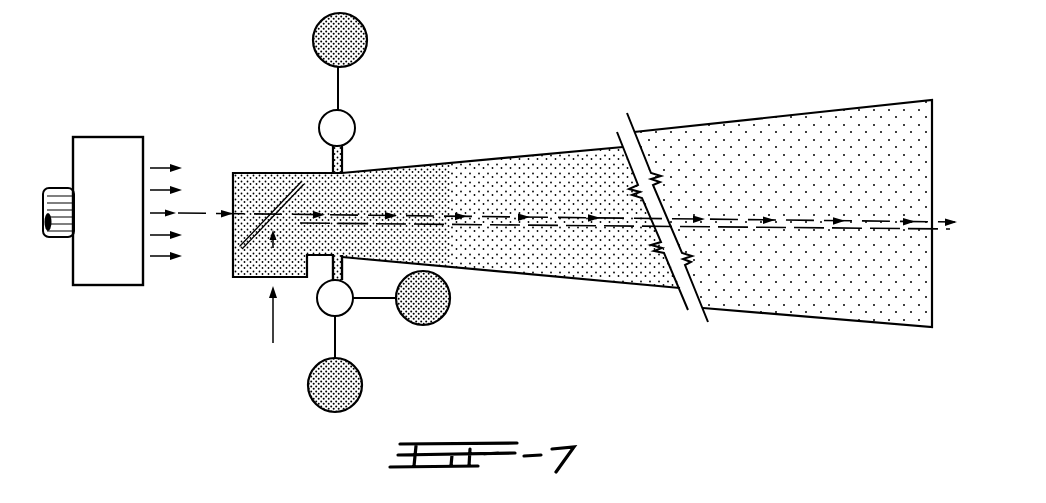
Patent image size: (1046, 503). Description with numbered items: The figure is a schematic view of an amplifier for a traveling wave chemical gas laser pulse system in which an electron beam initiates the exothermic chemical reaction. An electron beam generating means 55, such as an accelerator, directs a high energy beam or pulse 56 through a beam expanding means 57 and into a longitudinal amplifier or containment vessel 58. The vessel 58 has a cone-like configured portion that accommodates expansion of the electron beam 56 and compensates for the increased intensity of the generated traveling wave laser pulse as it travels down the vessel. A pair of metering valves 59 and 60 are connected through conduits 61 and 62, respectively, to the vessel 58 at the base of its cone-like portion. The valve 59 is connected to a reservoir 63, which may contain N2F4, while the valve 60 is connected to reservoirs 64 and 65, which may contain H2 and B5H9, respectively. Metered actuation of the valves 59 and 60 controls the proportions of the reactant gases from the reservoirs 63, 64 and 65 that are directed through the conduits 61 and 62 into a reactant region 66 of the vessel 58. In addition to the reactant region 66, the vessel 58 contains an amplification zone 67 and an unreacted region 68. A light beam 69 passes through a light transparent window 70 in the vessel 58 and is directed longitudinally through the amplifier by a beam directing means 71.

The electron beam generating means 55 is at (56, 188).
The high energy beam 56 is at (180, 190).
The beam expanding means 57 is at (123, 137).
The amplifier vessel 58 is at (462, 167).
The metering valve 59 is at (355, 128).
The metering valve 60 is at (325, 311).
The conduit 61 is at (335, 167).
The conduit 62 is at (345, 262).
The reservoir 63 is at (365, 37).
The reservoir 64 is at (362, 378).
The reservoir 65 is at (441, 313).
The reactant region 66 is at (382, 177).
The amplification zone 67 is at (532, 160).
The unreacted region 68 is at (783, 122).
The light beam 69 is at (270, 325).
The light transparent window 70 is at (258, 278).
The beam directing means 71 is at (282, 197).